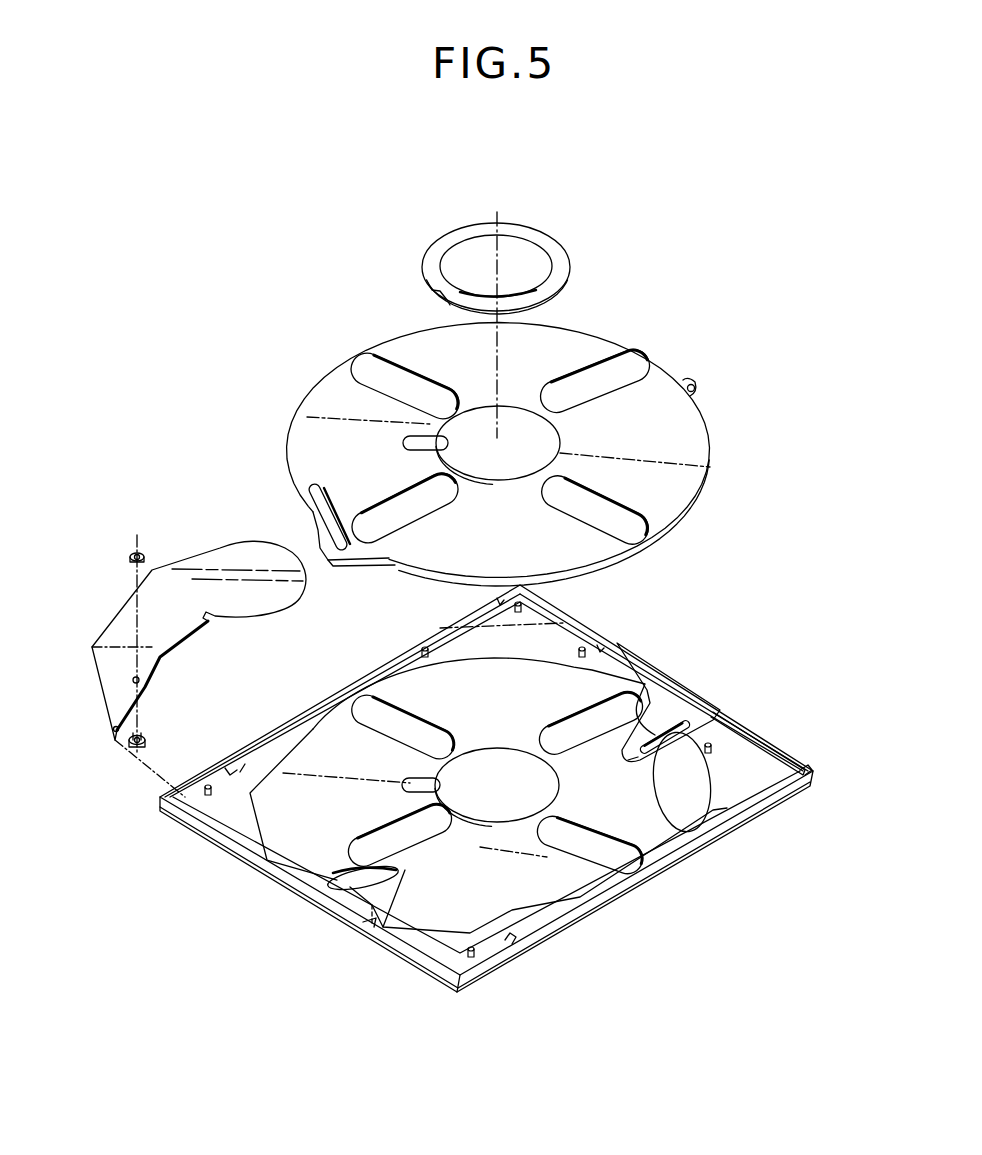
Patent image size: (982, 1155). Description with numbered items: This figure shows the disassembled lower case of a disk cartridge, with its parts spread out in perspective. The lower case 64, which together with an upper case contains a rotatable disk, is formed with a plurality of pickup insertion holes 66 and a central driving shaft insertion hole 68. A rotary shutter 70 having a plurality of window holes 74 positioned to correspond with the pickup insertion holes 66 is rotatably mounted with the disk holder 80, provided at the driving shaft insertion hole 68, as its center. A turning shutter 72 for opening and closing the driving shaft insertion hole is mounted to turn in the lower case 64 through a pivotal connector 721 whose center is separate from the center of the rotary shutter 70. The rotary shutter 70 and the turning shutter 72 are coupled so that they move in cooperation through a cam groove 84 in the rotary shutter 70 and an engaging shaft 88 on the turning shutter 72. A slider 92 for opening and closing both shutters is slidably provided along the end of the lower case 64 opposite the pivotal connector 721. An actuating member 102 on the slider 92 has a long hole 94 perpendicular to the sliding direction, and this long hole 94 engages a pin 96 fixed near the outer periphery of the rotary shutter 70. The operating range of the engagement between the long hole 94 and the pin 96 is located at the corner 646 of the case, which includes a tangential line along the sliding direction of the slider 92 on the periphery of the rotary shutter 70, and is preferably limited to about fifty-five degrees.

The lower case 64 is at (697, 843).
The pickup insertion holes 66 is at (375, 733).
The driving shaft insertion hole 68 is at (466, 755).
The rotary shutter 70 is at (705, 445).
The turning shutter 72 is at (221, 553).
The window holes 74 is at (428, 393).
The disk holder 80 is at (568, 250).
The cam groove 84 is at (325, 497).
The engaging shaft 88 is at (145, 738).
The slider 92 is at (680, 682).
The long hole 94 is at (658, 748).
The pin 96 is at (680, 378).
The actuating member 102 is at (640, 762).
The corner of the case 646 is at (740, 780).
The pivotal connector 721 is at (360, 922).